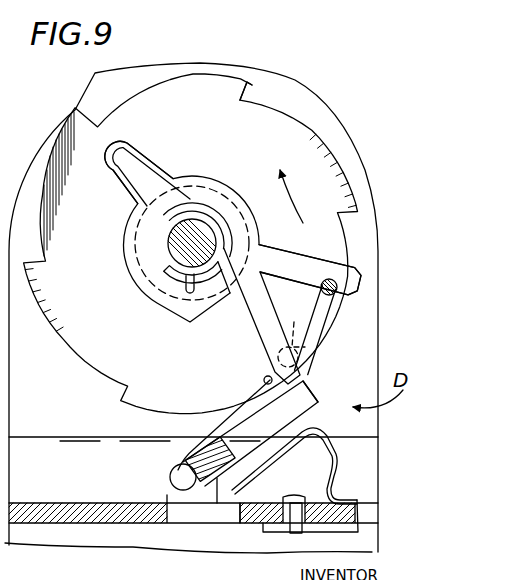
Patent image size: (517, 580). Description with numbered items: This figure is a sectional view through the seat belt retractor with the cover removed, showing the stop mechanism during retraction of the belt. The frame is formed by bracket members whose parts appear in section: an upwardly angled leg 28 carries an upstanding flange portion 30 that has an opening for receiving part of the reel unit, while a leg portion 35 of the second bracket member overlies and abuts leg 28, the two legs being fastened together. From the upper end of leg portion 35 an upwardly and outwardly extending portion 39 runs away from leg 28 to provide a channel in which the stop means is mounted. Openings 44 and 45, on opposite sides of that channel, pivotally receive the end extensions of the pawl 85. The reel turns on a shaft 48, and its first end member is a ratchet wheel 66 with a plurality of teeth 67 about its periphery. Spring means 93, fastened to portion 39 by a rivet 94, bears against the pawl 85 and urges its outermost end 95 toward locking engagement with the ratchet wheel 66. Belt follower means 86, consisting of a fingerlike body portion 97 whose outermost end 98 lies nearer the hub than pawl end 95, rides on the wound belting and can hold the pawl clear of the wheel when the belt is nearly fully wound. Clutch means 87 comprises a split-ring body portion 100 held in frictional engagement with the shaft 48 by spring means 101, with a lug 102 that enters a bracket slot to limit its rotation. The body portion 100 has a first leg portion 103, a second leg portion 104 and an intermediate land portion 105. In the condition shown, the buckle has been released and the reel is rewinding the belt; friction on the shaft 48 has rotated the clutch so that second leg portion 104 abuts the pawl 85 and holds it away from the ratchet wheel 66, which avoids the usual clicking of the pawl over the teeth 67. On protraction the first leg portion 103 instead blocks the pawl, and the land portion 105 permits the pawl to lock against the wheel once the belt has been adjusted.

The leg 28 is at (43, 447).
The flange portion 30 is at (72, 108).
The leg portion 35 is at (73, 540).
The upwardly and outwardly extending portion 39 is at (50, 507).
The opening 44 is at (173, 495).
The opening 45 is at (240, 515).
The shaft 48 is at (184, 240).
The ratchet wheel 66 is at (317, 136).
The teeth 67 is at (263, 77).
The pawl 85 is at (312, 410).
The belt follower means 86 is at (255, 404).
The clutch means 87 is at (143, 292).
The spring means 93 is at (327, 468).
The rivet 94 is at (293, 533).
The outermost end 95 is at (310, 386).
The fingerlike body portion 97 is at (253, 420).
The outermost end 98 is at (295, 312).
The body portion 100 is at (228, 155).
The spring means 101 is at (140, 151).
The lug 102 is at (323, 262).
The first leg portion 103 is at (361, 288).
The second leg portion 104 is at (264, 377).
The land portion 105 is at (323, 330).